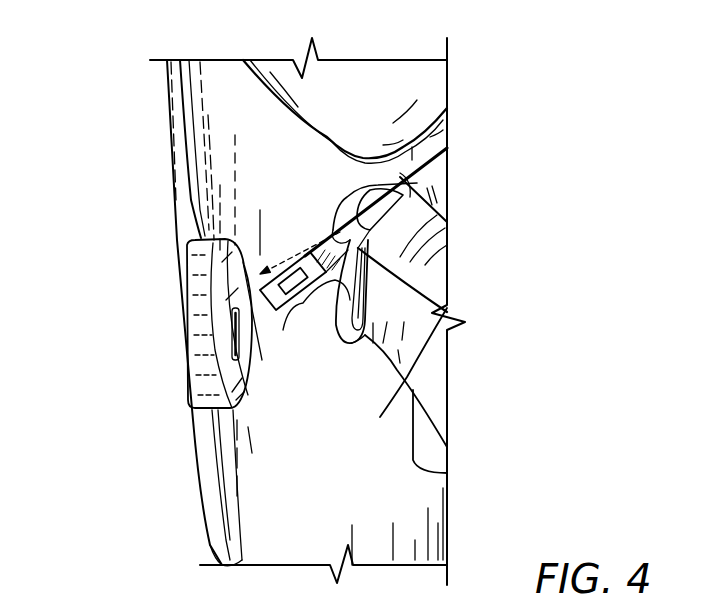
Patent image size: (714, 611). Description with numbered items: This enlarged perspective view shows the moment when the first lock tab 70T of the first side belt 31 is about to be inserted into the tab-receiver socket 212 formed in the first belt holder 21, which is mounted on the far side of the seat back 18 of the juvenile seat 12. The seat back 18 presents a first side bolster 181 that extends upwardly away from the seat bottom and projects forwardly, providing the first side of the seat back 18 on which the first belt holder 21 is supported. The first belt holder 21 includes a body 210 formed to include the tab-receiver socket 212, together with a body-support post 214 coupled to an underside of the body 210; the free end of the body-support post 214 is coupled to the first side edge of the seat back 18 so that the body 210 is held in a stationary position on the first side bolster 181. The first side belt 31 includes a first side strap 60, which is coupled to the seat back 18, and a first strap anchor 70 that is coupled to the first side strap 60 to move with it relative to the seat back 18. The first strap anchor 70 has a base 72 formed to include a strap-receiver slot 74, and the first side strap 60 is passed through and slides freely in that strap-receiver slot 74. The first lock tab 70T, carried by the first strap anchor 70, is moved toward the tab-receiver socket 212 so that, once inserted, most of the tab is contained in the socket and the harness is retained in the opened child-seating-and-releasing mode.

The juvenile seat 12 is at (213, 58).
The seat back 18 is at (174, 96).
The first side bolster 181 is at (187, 148).
The first belt holder 21 is at (181, 355).
The body 210 is at (187, 320).
The tab-receiver socket 212 is at (188, 359).
The body-support post 214 is at (239, 338).
The strap-receiver slot 74 is at (343, 213).
The first strap anchor 70 is at (396, 253).
The first lock tab 70T is at (293, 320).
The base 72 is at (348, 348).
The first side strap 60 is at (368, 350).
The first side belt 31 is at (422, 372).